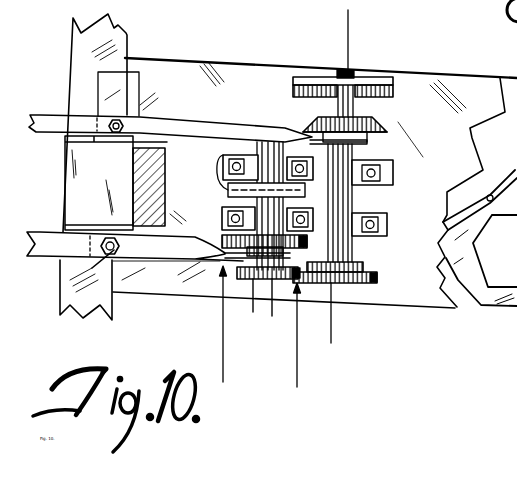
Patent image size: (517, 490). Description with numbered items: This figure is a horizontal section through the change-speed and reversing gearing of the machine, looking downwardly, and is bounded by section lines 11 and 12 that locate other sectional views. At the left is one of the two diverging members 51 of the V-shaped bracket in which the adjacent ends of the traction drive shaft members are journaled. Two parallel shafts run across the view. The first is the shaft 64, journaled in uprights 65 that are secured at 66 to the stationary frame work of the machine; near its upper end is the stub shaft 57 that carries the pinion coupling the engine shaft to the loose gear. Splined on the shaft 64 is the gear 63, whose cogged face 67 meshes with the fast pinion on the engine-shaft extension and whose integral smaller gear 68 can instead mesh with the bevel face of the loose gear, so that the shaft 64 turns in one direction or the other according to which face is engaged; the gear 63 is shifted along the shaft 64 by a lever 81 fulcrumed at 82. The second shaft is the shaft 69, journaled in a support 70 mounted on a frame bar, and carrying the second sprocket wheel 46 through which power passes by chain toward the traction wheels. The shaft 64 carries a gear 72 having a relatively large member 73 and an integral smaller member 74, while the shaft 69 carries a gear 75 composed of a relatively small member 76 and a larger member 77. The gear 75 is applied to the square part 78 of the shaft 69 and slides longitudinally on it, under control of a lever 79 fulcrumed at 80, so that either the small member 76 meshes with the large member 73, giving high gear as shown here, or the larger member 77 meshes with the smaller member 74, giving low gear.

The section line 11 is at (257, 337).
The section line 12 is at (344, 28).
The second sprocket wheel 46 is at (200, 135).
The bracket member 51 is at (142, 186).
The stub shaft 57 is at (352, 73).
The gear 63 is at (382, 129).
The shaft 64 is at (350, 99).
The upright 65 is at (393, 165).
The securing point 66 is at (380, 178).
The cogged face 67 is at (303, 128).
The smaller gear 68 is at (333, 120).
The shaft 69 is at (258, 165).
The support 70 is at (223, 158).
The gear 72 is at (380, 246).
The large gear member 73 is at (370, 284).
The smaller gear member 74 is at (370, 263).
The gear 75 is at (222, 240).
The small gear member 76 is at (271, 347).
The larger gear member 77 is at (398, 248).
The square part 78 is at (267, 327).
The lever 79 is at (152, 250).
The fulcrum 80 is at (95, 262).
The lever 81 is at (162, 133).
The fulcrum 82 is at (112, 123).